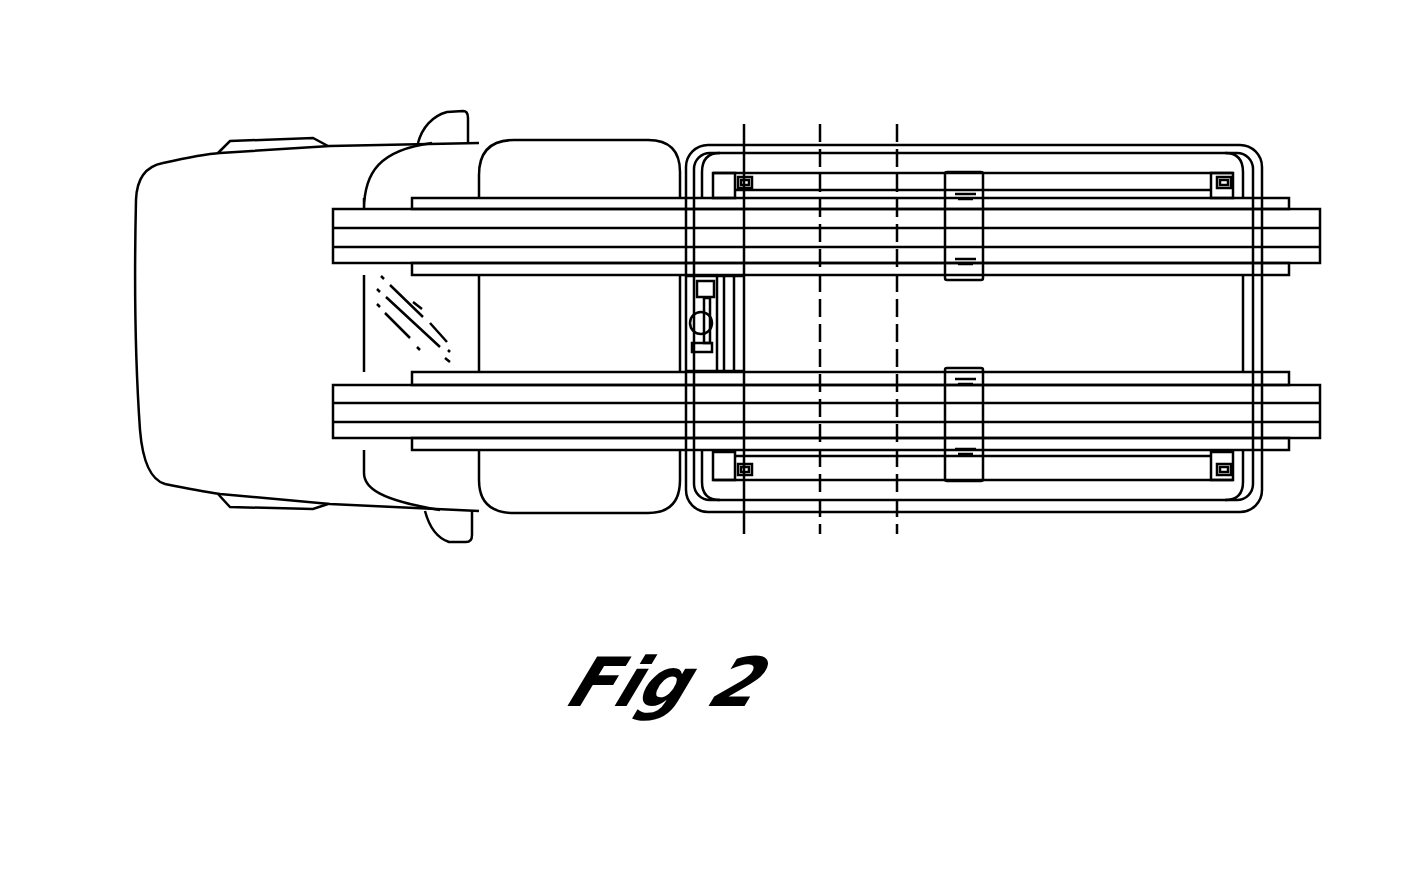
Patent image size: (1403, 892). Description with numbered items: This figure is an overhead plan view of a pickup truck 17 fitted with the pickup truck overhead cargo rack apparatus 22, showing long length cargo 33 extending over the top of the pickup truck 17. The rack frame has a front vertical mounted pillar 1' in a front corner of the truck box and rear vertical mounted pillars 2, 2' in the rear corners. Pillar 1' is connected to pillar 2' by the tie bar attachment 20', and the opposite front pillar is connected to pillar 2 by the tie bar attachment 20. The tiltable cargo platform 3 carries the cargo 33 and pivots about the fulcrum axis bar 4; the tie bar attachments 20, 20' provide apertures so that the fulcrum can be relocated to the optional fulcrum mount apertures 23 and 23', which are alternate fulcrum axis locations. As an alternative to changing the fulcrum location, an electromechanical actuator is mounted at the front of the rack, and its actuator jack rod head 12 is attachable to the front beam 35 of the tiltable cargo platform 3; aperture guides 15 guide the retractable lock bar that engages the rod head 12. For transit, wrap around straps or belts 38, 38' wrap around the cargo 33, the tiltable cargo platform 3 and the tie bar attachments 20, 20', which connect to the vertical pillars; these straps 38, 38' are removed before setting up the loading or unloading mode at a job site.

The pickup truck 17 is at (193, 175).
The pickup truck overhead cargo rack apparatus 22 is at (1178, 86).
The long length cargo 33 is at (1313, 213).
The tiltable cargo platform 3 is at (490, 200).
The tie bar attachment to pillars 20' is at (973, 144).
The tie bar attachment to pillars 20 is at (973, 511).
The front vertical mounted pillar 1' is at (714, 147).
The rear vertical mounted pillar 2' is at (1249, 158).
The rear vertical mounted pillar 2 is at (1246, 501).
The fulcrum axis bar for tiltable platform 4 is at (752, 178).
The optional fulcrum mount aperture 23 is at (846, 331).
The optional fulcrum mount aperture 23' is at (938, 331).
The wrap around strap or belt 38' is at (988, 197).
The wrap around strap or belt 38 is at (985, 410).
The front beam of cargo tilt rack 35 is at (735, 318).
The electromechanical actuator jack rod head 12 is at (688, 322).
The aperture guides for retractable lock bar 15 is at (690, 296).